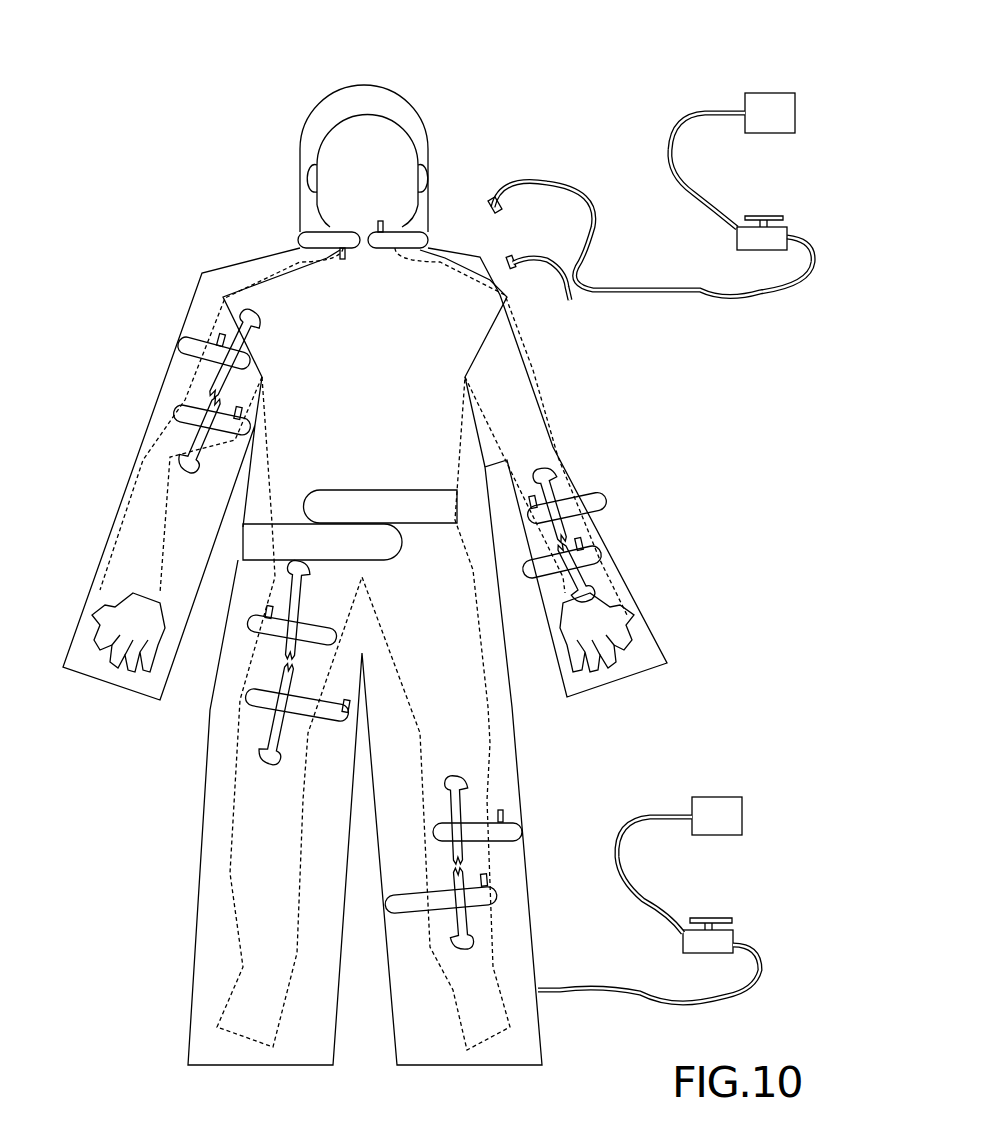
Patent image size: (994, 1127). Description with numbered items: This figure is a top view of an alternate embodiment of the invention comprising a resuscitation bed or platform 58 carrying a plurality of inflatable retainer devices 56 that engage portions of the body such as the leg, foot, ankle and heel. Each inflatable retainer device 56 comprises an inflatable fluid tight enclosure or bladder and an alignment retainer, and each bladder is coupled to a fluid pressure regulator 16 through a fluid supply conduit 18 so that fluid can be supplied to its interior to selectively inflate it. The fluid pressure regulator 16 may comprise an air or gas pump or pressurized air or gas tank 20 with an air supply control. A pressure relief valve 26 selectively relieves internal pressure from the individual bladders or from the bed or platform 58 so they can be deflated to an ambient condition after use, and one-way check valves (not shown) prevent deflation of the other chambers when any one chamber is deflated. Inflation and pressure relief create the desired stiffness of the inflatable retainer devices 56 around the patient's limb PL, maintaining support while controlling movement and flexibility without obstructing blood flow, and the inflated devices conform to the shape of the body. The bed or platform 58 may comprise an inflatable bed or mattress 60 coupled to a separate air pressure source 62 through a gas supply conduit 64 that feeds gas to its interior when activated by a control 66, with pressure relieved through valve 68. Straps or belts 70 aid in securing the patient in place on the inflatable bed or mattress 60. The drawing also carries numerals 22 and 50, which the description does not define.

The fluid pressure regulator 16 is at (657, 123).
The fluid supply conduit 18 is at (313, 242).
The air or gas pump or pressurized air or gas tank 20 is at (700, 797).
The pump 22 is at (683, 952).
The pressure relief valve 26 is at (381, 221).
The lower leg garment portion 50 is at (410, 923).
The inflatable retainer device 56 is at (298, 232).
The bed or platform 58 is at (587, 407).
The inflatable bed or mattress 60 is at (192, 978).
The separate air pressure source 62 is at (737, 248).
The gas supply conduit 64 is at (675, 147).
The control 66 is at (760, 93).
The valve 68 is at (570, 300).
The straps or belts 70 is at (338, 503).
The patient's limb PL is at (232, 873).